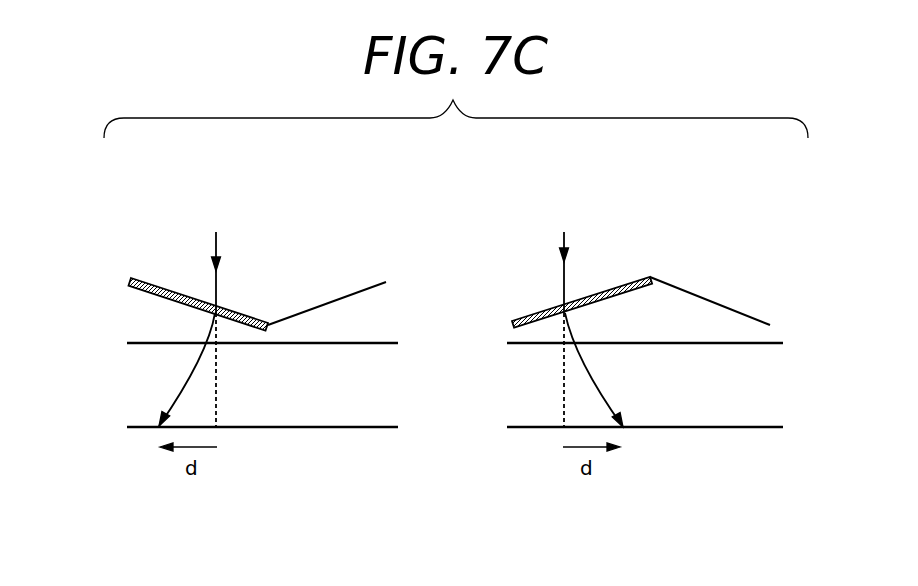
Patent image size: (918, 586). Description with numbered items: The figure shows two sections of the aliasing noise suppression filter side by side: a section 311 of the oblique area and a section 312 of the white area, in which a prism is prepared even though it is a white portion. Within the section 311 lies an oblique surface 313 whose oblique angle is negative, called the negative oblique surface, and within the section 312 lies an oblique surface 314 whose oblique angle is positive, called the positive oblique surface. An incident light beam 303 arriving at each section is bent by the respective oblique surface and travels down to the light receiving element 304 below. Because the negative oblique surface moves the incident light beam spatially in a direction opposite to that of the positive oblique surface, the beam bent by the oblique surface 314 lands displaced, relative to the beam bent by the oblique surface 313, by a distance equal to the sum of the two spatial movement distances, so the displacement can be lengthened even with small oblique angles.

The incident light beam 303 is at (216, 248).
The image pickup surface 304 is at (365, 428).
The section of oblique area 311 is at (352, 290).
The section of white area 312 is at (732, 308).
The oblique surface 313 is at (252, 317).
The oblique surface 314 is at (635, 280).